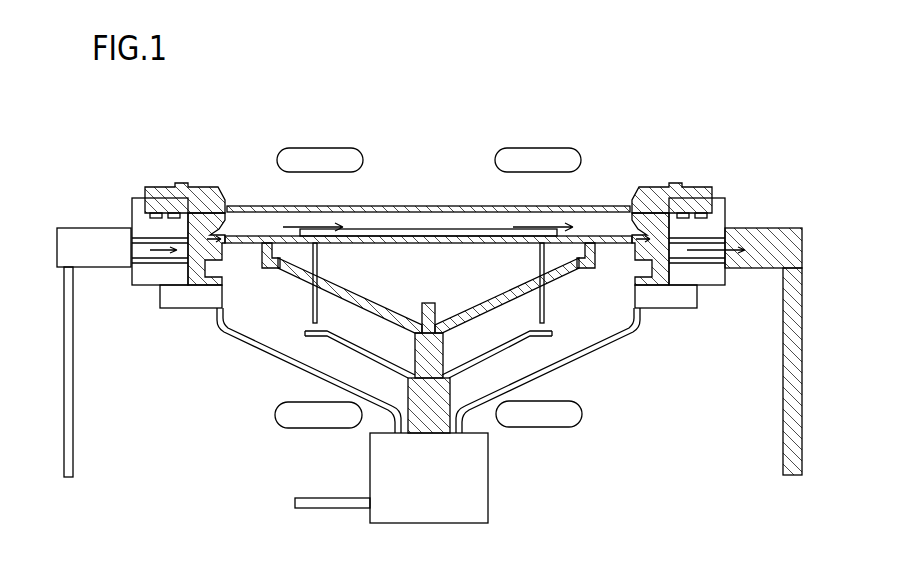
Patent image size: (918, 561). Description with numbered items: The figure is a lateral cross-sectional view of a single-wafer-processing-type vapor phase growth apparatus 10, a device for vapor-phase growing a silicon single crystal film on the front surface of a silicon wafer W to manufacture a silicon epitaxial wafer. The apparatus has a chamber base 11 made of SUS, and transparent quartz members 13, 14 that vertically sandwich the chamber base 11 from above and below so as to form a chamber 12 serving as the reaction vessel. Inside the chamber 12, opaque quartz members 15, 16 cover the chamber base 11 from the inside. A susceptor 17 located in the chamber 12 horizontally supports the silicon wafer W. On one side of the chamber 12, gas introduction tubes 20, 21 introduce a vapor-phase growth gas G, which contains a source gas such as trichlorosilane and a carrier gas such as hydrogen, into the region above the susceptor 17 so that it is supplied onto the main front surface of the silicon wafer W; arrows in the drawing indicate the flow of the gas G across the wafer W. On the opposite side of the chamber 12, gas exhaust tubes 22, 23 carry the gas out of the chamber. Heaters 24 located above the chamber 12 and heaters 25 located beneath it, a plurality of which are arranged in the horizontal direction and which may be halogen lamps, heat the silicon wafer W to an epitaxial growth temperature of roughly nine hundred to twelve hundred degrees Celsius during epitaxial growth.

The vapor phase growth apparatus 10 is at (80, 152).
The chamber base 11 is at (712, 290).
The chamber 12 is at (598, 194).
The transparent quartz member 13 is at (410, 205).
The transparent quartz member 14 is at (588, 356).
The opaque quartz member 15 is at (195, 292).
The opaque quartz member 16 is at (232, 200).
The susceptor 17 is at (343, 244).
The gas introduction tube 20 is at (84, 233).
The gas introduction tube 21 is at (63, 366).
The gas exhaust tube 22 is at (773, 228).
The gas exhaust tube 23 is at (803, 363).
The heater 24 is at (340, 145).
The heater 25 is at (278, 434).
The silicon wafer W is at (440, 223).
The vapor-phase growth gas G is at (153, 248).